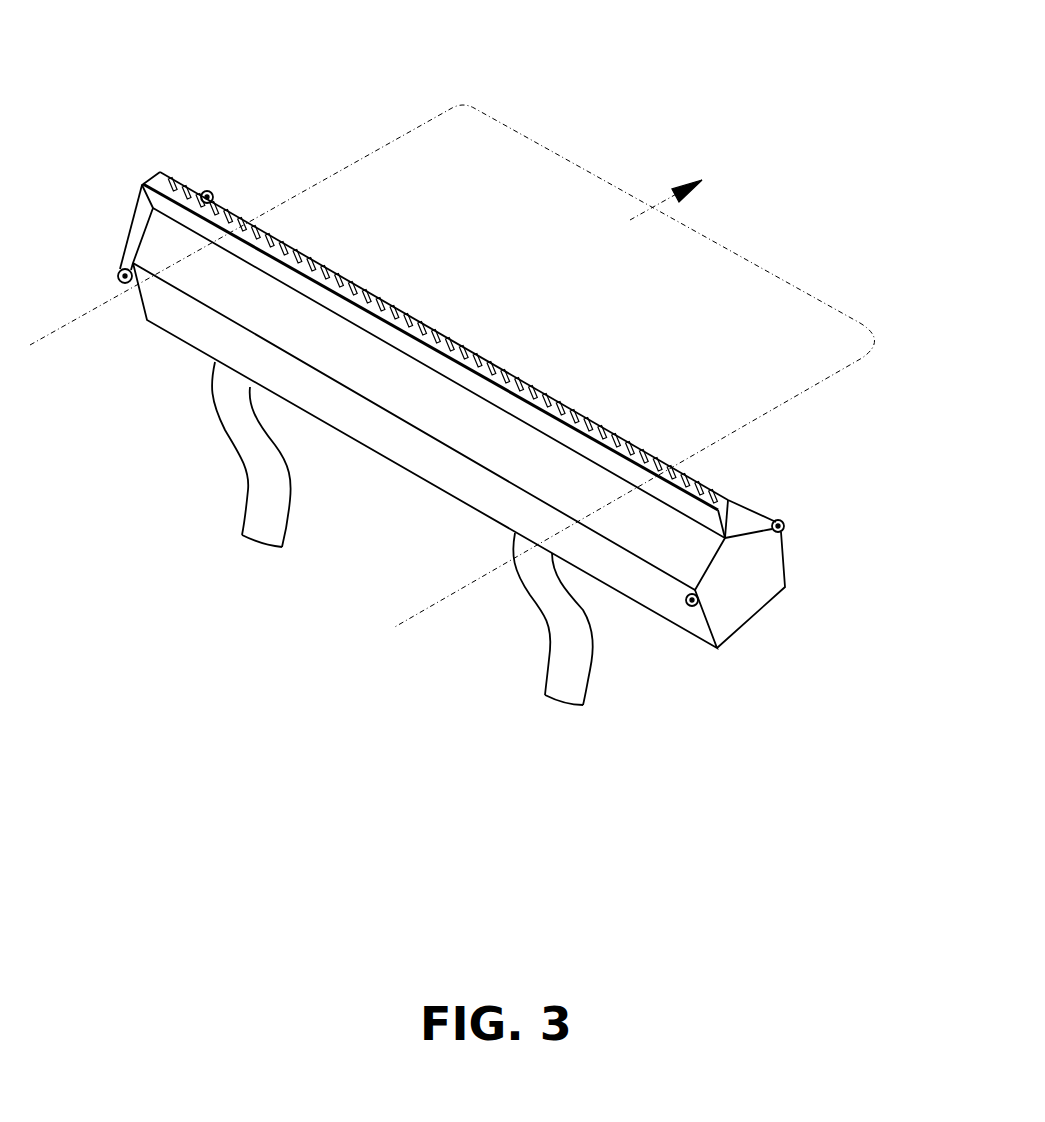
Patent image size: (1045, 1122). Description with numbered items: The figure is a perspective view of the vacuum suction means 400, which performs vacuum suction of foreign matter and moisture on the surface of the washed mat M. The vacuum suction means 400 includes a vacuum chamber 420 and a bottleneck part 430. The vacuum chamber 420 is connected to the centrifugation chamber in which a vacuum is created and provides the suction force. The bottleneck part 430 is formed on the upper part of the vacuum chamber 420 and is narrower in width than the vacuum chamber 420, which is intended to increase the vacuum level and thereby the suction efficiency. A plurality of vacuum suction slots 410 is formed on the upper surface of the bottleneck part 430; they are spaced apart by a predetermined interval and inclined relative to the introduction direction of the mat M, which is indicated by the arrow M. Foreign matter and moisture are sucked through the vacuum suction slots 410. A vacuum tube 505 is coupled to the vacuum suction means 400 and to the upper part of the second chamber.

The mat M is at (598, 173).
The vacuum suction means 400 is at (375, 558).
The vacuum suction slots 410 is at (705, 488).
The vacuum chamber 420 is at (745, 603).
The bottleneck part 430 is at (740, 505).
The vacuum tube 505 is at (260, 478).